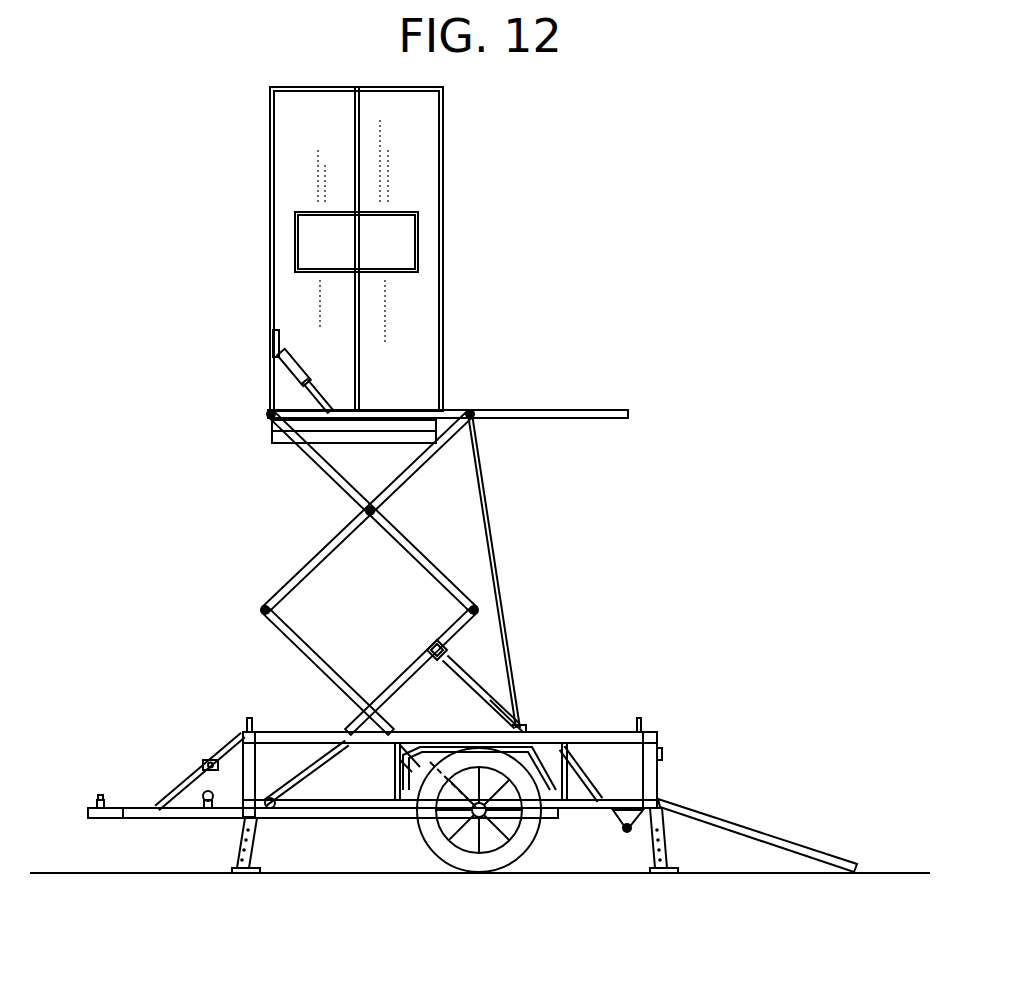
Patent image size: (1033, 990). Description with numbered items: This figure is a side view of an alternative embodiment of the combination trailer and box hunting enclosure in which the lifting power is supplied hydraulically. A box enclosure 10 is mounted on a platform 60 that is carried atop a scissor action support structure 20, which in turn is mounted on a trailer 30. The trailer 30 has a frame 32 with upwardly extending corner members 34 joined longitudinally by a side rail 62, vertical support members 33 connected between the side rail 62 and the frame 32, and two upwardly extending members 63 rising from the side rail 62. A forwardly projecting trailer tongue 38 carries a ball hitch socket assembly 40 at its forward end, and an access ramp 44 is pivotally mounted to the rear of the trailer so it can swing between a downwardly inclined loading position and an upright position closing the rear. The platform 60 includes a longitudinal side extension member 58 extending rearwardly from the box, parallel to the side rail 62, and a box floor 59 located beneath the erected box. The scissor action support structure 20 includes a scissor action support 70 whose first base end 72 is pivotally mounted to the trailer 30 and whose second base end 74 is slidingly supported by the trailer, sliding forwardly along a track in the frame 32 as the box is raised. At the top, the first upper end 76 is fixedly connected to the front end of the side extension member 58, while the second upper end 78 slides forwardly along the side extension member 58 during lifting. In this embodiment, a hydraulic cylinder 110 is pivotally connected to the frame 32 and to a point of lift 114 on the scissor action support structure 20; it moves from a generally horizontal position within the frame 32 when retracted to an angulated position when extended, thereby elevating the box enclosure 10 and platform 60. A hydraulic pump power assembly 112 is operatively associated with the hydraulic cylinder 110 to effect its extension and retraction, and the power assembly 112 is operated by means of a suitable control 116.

The box enclosure 10 is at (462, 151).
The scissor action support structure 20 is at (383, 572).
The trailer 30 is at (469, 773).
The frame 32 is at (592, 806).
The vertical support member 33 is at (397, 770).
The corner member 34 is at (655, 770).
The trailer tongue 38 is at (138, 818).
The ball hitch socket assembly 40 is at (100, 796).
The access ramp 44 is at (815, 852).
The longitudinal side extension member 58 is at (583, 410).
The box floor 59 is at (271, 438).
The platform 60 is at (633, 395).
The side rail 62 is at (571, 740).
The upwardly extending member 63 is at (252, 718).
The scissor action support 70 is at (308, 570).
The first base end 72 is at (275, 810).
The second base end 74 is at (445, 830).
The first upper end 76 is at (270, 413).
The second upper end 78 is at (473, 412).
The hydraulic cylinder 110 is at (600, 797).
The hydraulic pump power assembly 112 is at (205, 810).
The point of lift 114 is at (432, 650).
The control 116 is at (208, 760).